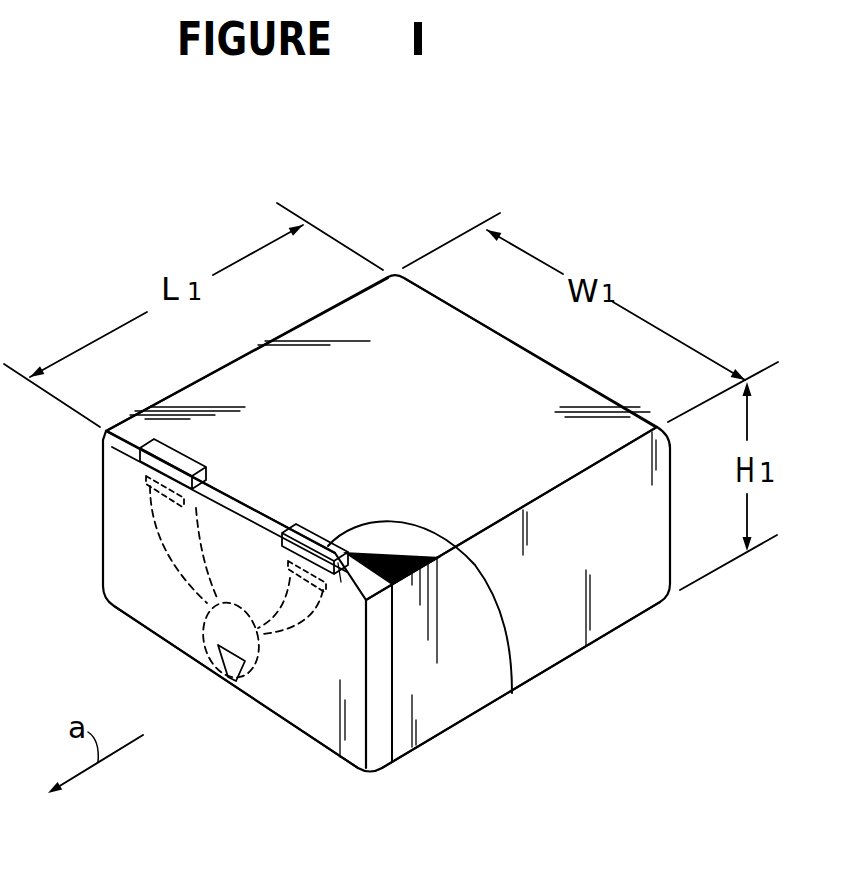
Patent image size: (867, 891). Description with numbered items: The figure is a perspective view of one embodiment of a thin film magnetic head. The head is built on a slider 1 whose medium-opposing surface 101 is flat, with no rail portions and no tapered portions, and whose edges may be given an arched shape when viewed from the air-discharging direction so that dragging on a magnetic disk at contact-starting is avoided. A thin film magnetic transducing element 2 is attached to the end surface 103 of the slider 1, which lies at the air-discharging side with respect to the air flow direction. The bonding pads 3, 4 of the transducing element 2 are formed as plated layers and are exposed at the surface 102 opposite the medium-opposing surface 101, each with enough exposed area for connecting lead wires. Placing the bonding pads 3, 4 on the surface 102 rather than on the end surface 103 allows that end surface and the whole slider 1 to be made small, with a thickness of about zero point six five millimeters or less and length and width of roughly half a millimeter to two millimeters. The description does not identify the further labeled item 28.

The slider 1 is at (672, 492).
The thin film magnetic transducing element 2 is at (205, 630).
The bonding pad 3 is at (167, 443).
The bonding pad 4 is at (512, 693).
The edge layer strip 28 is at (105, 430).
The medium-opposing surface 101 is at (565, 661).
The surface opposite the medium-opposing surface 102 is at (462, 375).
The end surface 103 is at (295, 668).